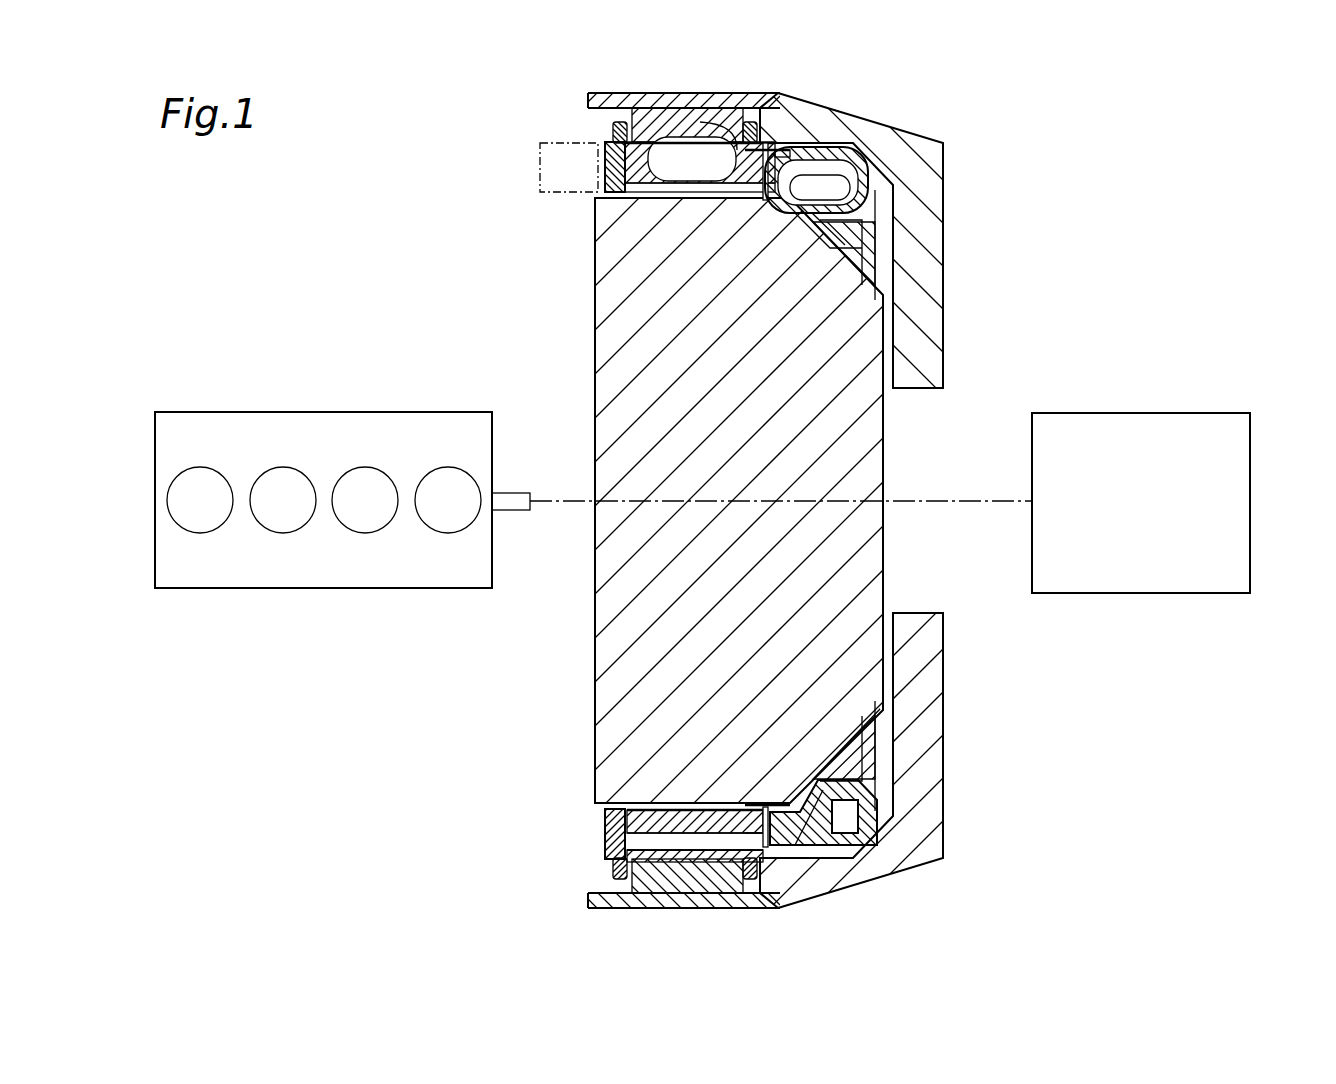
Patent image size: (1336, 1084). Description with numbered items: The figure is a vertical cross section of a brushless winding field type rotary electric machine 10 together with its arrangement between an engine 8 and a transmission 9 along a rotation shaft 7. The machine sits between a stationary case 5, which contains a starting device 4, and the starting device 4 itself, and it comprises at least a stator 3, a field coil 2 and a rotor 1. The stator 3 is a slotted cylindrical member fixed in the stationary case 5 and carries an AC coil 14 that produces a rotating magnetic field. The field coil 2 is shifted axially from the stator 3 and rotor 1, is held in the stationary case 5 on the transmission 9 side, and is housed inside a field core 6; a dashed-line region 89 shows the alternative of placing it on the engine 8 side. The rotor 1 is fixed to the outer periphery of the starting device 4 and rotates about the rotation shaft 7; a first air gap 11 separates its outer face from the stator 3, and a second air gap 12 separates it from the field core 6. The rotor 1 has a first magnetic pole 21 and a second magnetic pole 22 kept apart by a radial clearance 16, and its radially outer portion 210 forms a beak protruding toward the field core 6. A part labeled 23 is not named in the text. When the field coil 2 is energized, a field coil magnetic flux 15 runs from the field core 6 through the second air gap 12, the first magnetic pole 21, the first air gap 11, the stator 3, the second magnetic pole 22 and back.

The rotor 1 is at (580, 167).
The field coil 2 is at (890, 168).
The stator 3 is at (593, 119).
The starting device 4 is at (607, 323).
The stationary case 5 is at (650, 93).
The field core 6 is at (888, 187).
The rotation shaft 7 is at (555, 495).
The engine 8 is at (325, 430).
The transmission 9 is at (1140, 432).
The brushless winding field type rotary electric machine 10 is at (432, 96).
The first air gap 11 is at (726, 140).
The second air gap 12 is at (586, 193).
The AC coil 14 is at (622, 122).
The field coil magnetic flux 15 is at (875, 200).
The radial clearance 16 is at (702, 840).
The first magnetic pole 21 is at (764, 132).
The second magnetic pole 22 is at (603, 170).
The side plate 23 is at (597, 183).
The region 89 is at (540, 185).
The radially outer portion 210 is at (780, 142).